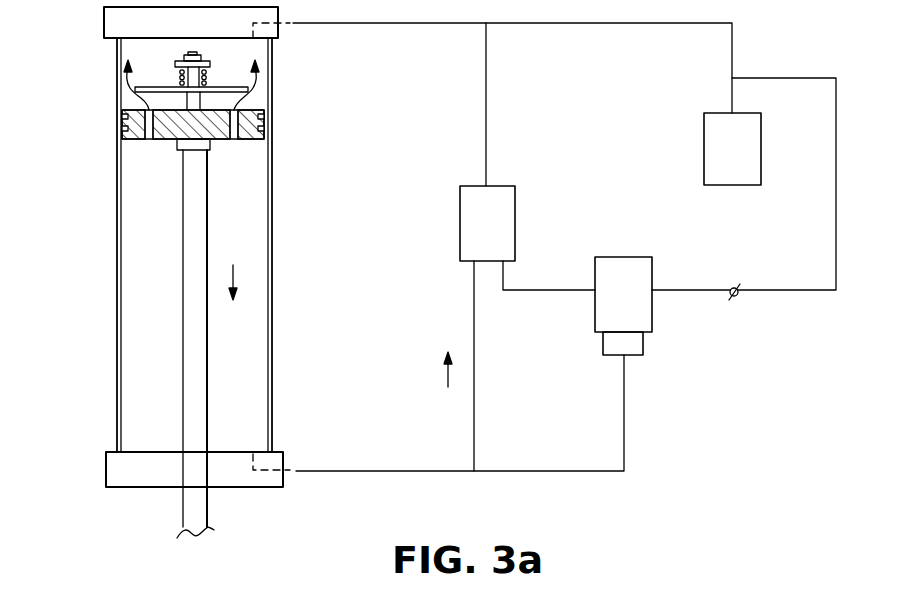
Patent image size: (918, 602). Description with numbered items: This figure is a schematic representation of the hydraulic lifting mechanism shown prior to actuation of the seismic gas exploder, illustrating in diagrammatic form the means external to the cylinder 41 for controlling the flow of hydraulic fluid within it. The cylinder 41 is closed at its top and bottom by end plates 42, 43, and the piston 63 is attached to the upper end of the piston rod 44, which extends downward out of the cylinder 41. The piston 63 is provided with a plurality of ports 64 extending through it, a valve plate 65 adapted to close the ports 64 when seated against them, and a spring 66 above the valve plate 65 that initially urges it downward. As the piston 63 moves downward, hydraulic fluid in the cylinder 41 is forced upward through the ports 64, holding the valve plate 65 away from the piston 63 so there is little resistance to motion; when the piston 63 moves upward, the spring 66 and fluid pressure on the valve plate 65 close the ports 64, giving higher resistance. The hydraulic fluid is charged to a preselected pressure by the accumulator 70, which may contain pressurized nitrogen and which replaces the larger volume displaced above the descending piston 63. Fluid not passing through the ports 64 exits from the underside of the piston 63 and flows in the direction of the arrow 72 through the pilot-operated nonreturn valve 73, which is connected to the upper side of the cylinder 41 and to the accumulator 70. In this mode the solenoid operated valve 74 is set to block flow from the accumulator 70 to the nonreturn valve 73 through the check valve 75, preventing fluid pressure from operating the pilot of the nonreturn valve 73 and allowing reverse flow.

The cylinder 41 is at (117, 310).
The top end plate 42 is at (118, 23).
The bottom end plate 43 is at (106, 470).
The piston rod 44 is at (188, 251).
The piston 63 is at (264, 118).
The ports 64 is at (147, 139).
The valve plate 65 is at (163, 89).
The spring 66 is at (207, 78).
The accumulator 70 is at (733, 120).
The arrow 72 is at (448, 378).
The pilot-operated nonreturn valve 73 is at (472, 225).
The solenoid operated valve 74 is at (643, 319).
The check valve 75 is at (736, 297).